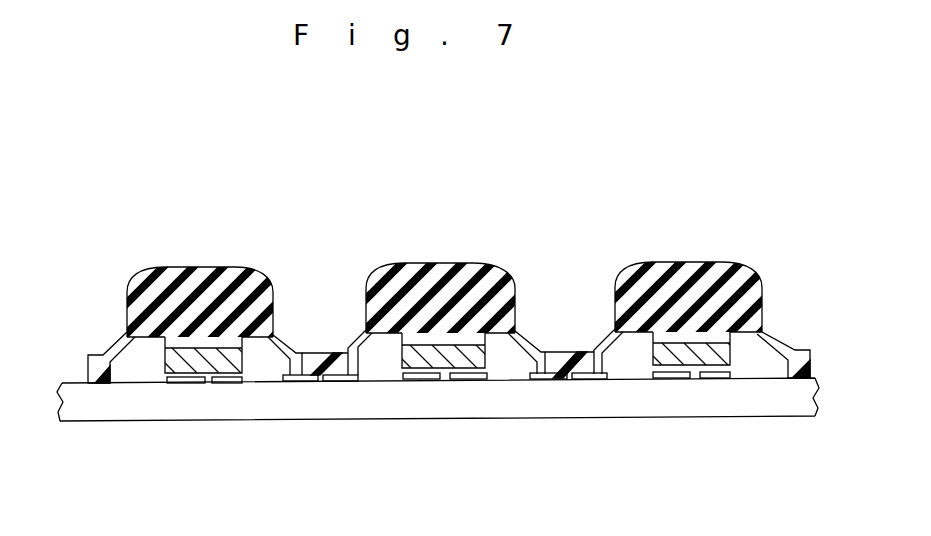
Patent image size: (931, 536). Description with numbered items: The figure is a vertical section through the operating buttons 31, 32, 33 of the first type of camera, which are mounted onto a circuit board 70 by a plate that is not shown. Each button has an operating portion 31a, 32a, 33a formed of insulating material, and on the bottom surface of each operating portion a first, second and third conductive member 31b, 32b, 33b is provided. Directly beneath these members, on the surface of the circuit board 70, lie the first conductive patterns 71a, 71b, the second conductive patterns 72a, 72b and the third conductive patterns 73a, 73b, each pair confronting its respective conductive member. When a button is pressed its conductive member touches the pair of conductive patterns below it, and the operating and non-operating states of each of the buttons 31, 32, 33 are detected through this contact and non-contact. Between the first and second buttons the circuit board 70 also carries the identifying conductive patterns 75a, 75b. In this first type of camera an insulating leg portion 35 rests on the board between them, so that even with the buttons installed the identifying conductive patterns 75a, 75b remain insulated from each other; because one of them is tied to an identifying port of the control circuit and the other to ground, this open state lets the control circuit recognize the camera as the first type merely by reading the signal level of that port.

The circuit board 70 is at (90, 410).
The operating button 31 is at (205, 332).
The operating portion 31a is at (215, 273).
The first conductive member 31b is at (167, 353).
The operating button 32 is at (455, 311).
The operating portion 32a is at (466, 278).
The second conductive member 32b is at (485, 350).
The operating button 33 is at (693, 323).
The operating portion 33a is at (716, 270).
The third conductive member 33b is at (733, 350).
The insulating leg portion 35 is at (315, 353).
The first conductive pattern 71a is at (185, 383).
The first conductive pattern 71b is at (228, 383).
The second conductive pattern 72a is at (430, 380).
The second conductive pattern 72b is at (472, 380).
The third conductive pattern 73a is at (673, 379).
The third conductive pattern 73b is at (717, 379).
The identifying conductive pattern 75a is at (305, 381).
The identifying conductive pattern 75b is at (348, 381).